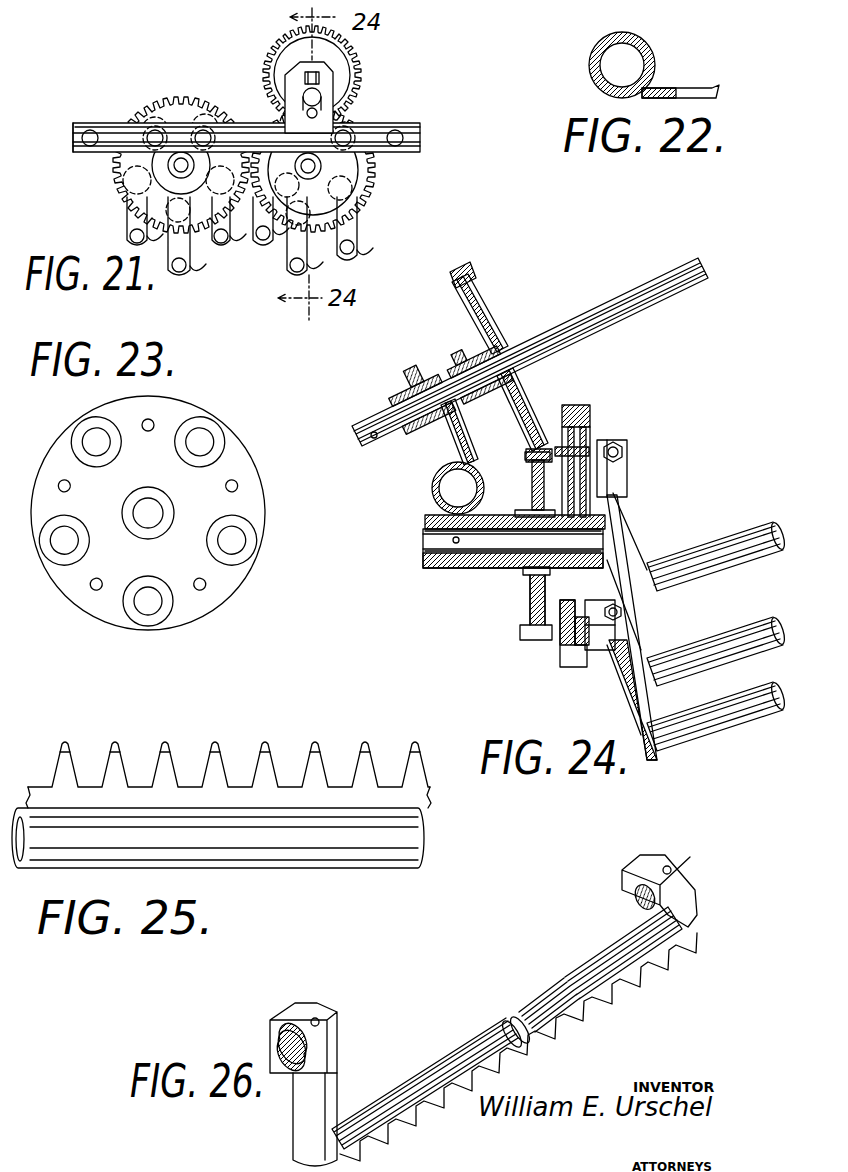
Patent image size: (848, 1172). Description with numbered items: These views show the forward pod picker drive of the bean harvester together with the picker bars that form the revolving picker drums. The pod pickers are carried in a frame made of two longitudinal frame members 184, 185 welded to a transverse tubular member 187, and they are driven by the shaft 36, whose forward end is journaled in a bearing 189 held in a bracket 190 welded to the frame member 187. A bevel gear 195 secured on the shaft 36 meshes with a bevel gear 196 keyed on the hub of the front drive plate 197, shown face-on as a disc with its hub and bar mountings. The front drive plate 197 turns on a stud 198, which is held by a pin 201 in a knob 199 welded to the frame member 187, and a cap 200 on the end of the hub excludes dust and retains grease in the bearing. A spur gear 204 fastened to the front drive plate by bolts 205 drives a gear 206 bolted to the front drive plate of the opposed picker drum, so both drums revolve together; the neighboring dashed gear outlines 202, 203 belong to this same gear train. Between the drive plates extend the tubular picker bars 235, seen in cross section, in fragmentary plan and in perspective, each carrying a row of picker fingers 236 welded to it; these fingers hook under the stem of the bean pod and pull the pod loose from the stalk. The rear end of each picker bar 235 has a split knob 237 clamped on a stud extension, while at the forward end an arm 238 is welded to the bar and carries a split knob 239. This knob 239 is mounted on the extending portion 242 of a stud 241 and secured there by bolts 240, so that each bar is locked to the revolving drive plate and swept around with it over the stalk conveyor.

In FIG. 21, the shaft 36 is at (336, 118).
In FIG. 24, the shaft 36 is at (645, 278).
In FIG. 21, the longitudinal frame member 184 is at (88, 124).
In FIG. 21, the longitudinal frame member 185 is at (422, 142).
In FIG. 21, the transverse tubular member 187 is at (112, 124).
In FIG. 24, the transverse tubular member 187 is at (438, 490).
In FIG. 21, the bearing 189 is at (320, 80).
In FIG. 24, the bearing 189 is at (416, 430).
In FIG. 21, the bracket 190 is at (328, 98).
In FIG. 24, the bracket 190 is at (448, 440).
In FIG. 21, the bevel gear 195 is at (332, 60).
In FIG. 24, the bevel gear 195 is at (482, 300).
In FIG. 21, the bevel gear 196 is at (355, 213).
In FIG. 24, the bevel gear 196 is at (527, 632).
In FIG. 23, the front drive plate 197 is at (237, 460).
In FIG. 24, the front drive plate 197 is at (563, 637).
In FIG. 21, the stud 198 is at (321, 166).
In FIG. 24, the stud 198 is at (480, 556).
In FIG. 21, the knob 199 is at (305, 175).
In FIG. 24, the knob 199 is at (454, 542).
In FIG. 24, the cap 200 is at (608, 520).
In FIG. 24, the pin 201 is at (444, 562).
In FIG. 21, the gear 202 is at (128, 194).
In FIG. 21, the gear 203 is at (118, 163).
In FIG. 21, the spur gear 204 is at (338, 197).
In FIG. 24, the spur gear 204 is at (580, 405).
In FIG. 24, the bolts 205 is at (590, 448).
In FIG. 21, the gear 206 is at (186, 105).
In FIG. 22, the picker bar 235 is at (652, 62).
In FIG. 24, the picker bar 235 is at (712, 722).
In FIG. 25, the picker bar 235 is at (303, 850).
In FIG. 26, the picker bar 235 is at (470, 1050).
In FIG. 21, the picker fingers 236 is at (322, 260).
In FIG. 22, the picker fingers 236 is at (696, 96).
In FIG. 25, the picker fingers 236 is at (266, 746).
In FIG. 26, the picker fingers 236 is at (660, 975).
In FIG. 26, the split knob 237 is at (672, 873).
In FIG. 21, the arm 238 is at (348, 228).
In FIG. 24, the arm 238 is at (630, 530).
In FIG. 26, the arm 238 is at (312, 1095).
In FIG. 24, the split knob 239 is at (612, 474).
In FIG. 26, the split knob 239 is at (320, 1040).
In FIG. 24, the bolts 240 is at (622, 612).
In FIG. 24, the stud 241 is at (582, 630).
In FIG. 24, the extending portion 242 is at (603, 655).